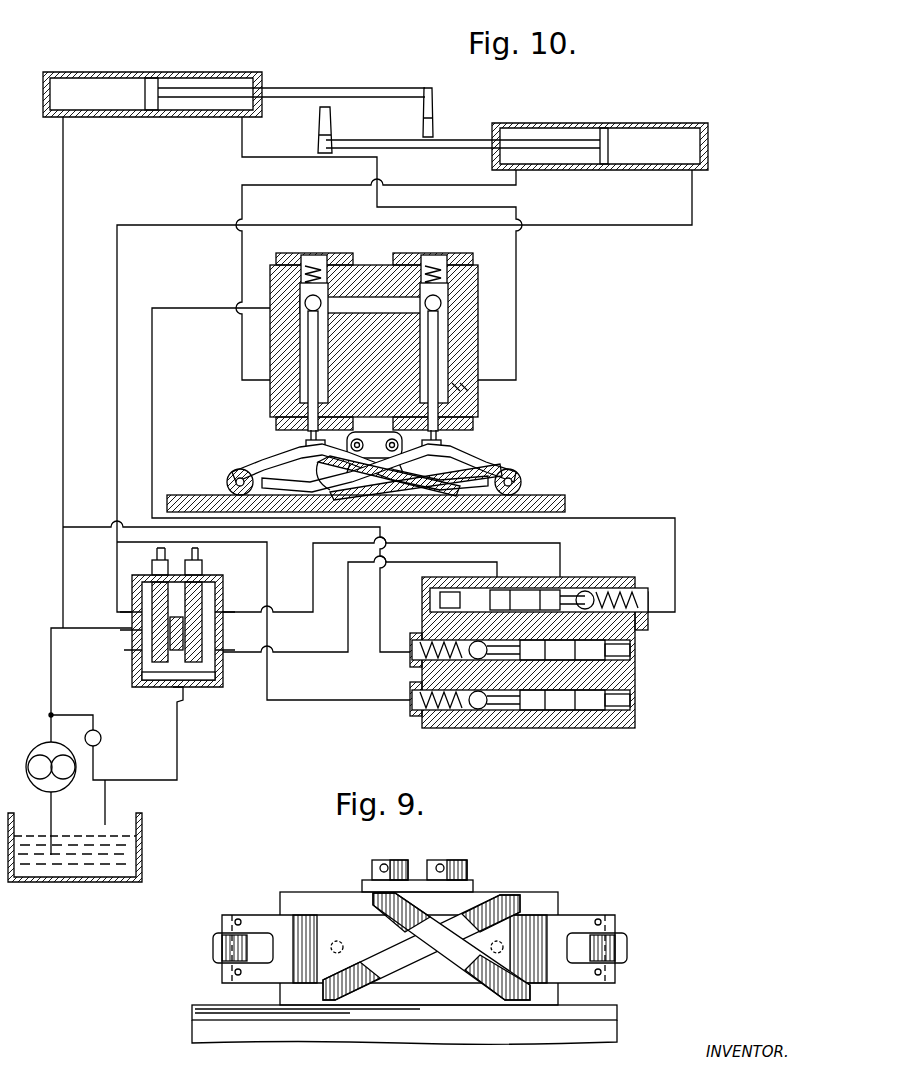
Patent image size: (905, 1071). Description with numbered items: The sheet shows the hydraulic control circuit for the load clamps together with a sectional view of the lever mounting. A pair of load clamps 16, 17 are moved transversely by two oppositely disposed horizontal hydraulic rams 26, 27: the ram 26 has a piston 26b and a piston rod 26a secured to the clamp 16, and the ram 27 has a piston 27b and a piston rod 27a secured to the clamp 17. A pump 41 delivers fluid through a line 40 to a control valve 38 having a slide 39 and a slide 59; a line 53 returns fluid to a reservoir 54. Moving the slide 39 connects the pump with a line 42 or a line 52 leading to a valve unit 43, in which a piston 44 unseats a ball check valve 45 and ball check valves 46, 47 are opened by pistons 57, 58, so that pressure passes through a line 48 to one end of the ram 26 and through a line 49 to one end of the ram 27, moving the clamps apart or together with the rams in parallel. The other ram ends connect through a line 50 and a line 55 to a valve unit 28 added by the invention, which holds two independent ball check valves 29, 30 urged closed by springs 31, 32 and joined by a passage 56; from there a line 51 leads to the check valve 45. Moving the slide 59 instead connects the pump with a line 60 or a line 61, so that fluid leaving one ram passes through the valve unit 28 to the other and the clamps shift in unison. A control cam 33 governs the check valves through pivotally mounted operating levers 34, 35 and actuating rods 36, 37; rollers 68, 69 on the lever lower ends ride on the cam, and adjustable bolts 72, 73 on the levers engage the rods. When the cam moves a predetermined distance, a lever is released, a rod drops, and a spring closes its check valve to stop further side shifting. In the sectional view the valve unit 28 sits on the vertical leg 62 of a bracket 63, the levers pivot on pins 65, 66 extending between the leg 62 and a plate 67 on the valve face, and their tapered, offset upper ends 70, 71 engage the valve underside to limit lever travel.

In FIG. 10, the load clamp 16 is at (332, 122).
In FIG. 10, the load clamp 17 is at (433, 115).
In FIG. 10, the hydraulic ram 26 is at (581, 123).
In FIG. 10, the piston rod 26a is at (466, 140).
In FIG. 10, the piston 26b is at (609, 130).
In FIG. 10, the hydraulic ram 27 is at (127, 72).
In FIG. 10, the piston rod 27a is at (316, 88).
In FIG. 10, the piston 27b is at (160, 86).
In FIG. 10, the valve unit 28 is at (410, 366).
In FIG. 9, the valve unit 28 is at (543, 892).
In FIG. 10, the ball check valve 29 is at (322, 292).
In FIG. 10, the ball check valve 30 is at (446, 292).
In FIG. 10, the spring 31 is at (311, 265).
In FIG. 10, the spring 32 is at (431, 265).
In FIG. 10, the control cam 33 is at (548, 502).
In FIG. 10, the operating lever 34 is at (252, 468).
In FIG. 9, the operating lever 34 is at (298, 928).
In FIG. 10, the operating lever 35 is at (492, 472).
In FIG. 9, the operating lever 35 is at (545, 927).
In FIG. 10, the actuating rod 36 is at (305, 437).
In FIG. 10, the actuating rod 37 is at (470, 402).
In FIG. 10, the control valve 38 is at (223, 596).
In FIG. 10, the slide 39 is at (204, 566).
In FIG. 10, the line 40 is at (51, 699).
In FIG. 10, the pump 41 is at (36, 748).
In FIG. 10, the line 42 is at (313, 652).
In FIG. 10, the valve unit 43 is at (583, 580).
In FIG. 10, the piston 44 is at (512, 598).
In FIG. 10, the ball check valve 45 is at (618, 584).
In FIG. 10, the ball check valve 46 is at (486, 706).
In FIG. 10, the ball check valve 47 is at (478, 712).
In FIG. 10, the line 48 is at (620, 225).
In FIG. 10, the line 49 is at (64, 338).
In FIG. 10, the line 50 is at (240, 185).
In FIG. 10, the line 51 is at (152, 400).
In FIG. 10, the line 52 is at (518, 545).
In FIG. 10, the line 53 is at (177, 751).
In FIG. 10, the reservoir 54 is at (142, 832).
In FIG. 10, the line 55 is at (516, 272).
In FIG. 10, the passage 56 is at (363, 297).
In FIG. 10, the piston 57 is at (590, 712).
In FIG. 10, the piston 58 is at (557, 712).
In FIG. 10, the slide 59 is at (154, 566).
In FIG. 10, the line 60 is at (117, 568).
In FIG. 10, the line 61 is at (63, 594).
In FIG. 9, the vertical leg 62 is at (617, 1012).
In FIG. 9, the bracket 63 is at (270, 1030).
In FIG. 9, the pin 65 is at (442, 860).
In FIG. 9, the pin 66 is at (397, 860).
In FIG. 9, the plate 67 is at (472, 882).
In FIG. 10, the roller 68 is at (228, 474).
In FIG. 10, the roller 69 is at (520, 472).
In FIG. 10, the upper end of operating lever 70 is at (438, 485).
In FIG. 9, the upper end of operating lever 70 is at (502, 897).
In FIG. 10, the upper end of operating lever 71 is at (324, 482).
In FIG. 9, the upper end of operating lever 71 is at (380, 992).
In FIG. 10, the adjustable bolt 72 is at (322, 470).
In FIG. 10, the adjustable bolt 73 is at (441, 448).